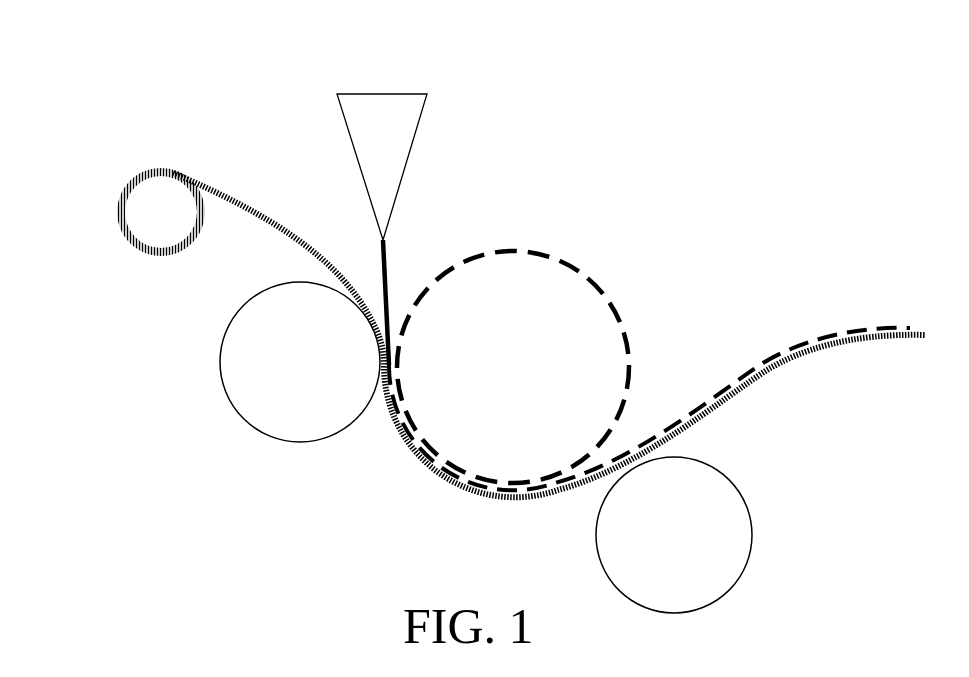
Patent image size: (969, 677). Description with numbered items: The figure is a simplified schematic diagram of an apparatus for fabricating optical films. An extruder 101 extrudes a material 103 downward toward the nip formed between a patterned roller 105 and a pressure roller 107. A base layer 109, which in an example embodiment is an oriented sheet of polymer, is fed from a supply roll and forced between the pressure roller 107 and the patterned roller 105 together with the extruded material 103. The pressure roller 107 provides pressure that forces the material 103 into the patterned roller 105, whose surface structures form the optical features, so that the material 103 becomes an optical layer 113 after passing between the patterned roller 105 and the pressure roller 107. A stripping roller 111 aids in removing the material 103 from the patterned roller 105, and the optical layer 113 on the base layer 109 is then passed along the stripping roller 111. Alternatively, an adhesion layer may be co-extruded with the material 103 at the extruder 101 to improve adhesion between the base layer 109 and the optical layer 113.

The extruder 101 is at (403, 127).
The material 103 is at (387, 270).
The patterned roller 105 is at (592, 348).
The pressure roller 107 is at (263, 378).
The base layer 109 is at (225, 203).
The stripping roller 111 is at (753, 527).
The optical layer 113 is at (623, 453).